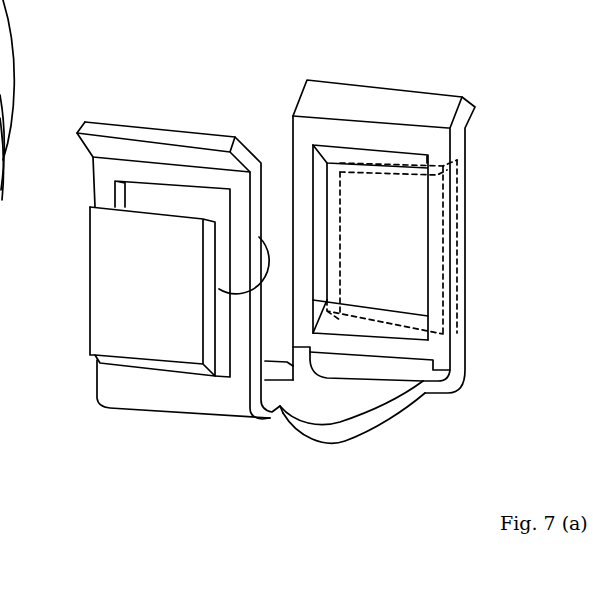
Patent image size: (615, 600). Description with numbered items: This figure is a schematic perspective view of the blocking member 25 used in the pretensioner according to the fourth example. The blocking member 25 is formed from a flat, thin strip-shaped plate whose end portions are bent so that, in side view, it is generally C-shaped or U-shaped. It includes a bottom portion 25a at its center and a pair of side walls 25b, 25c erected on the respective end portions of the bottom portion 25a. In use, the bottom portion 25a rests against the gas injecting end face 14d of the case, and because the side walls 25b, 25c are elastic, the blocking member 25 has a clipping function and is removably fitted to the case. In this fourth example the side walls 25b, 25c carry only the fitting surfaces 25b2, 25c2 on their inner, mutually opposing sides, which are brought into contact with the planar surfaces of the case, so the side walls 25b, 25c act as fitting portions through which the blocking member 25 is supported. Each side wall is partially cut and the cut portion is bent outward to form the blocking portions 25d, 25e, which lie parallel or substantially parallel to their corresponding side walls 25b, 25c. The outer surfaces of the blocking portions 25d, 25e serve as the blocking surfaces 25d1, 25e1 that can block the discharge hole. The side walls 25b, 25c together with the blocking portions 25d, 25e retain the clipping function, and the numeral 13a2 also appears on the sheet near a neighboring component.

The blocking member 25 is at (268, 86).
The bottom portion 25a is at (377, 420).
The side wall 25b is at (180, 165).
The fitting surface 25b2 is at (207, 291).
The side wall 25c is at (365, 133).
The fitting surface 25c2 is at (296, 196).
The blocking portion 25d is at (110, 308).
The blocking surface 25d1 is at (100, 263).
The blocking portion 25e is at (404, 187).
The blocking surface 25e1 is at (470, 250).
The housing portion 13a2 is at (22, 0).
The gas injecting end face 14d is at (0, 133).